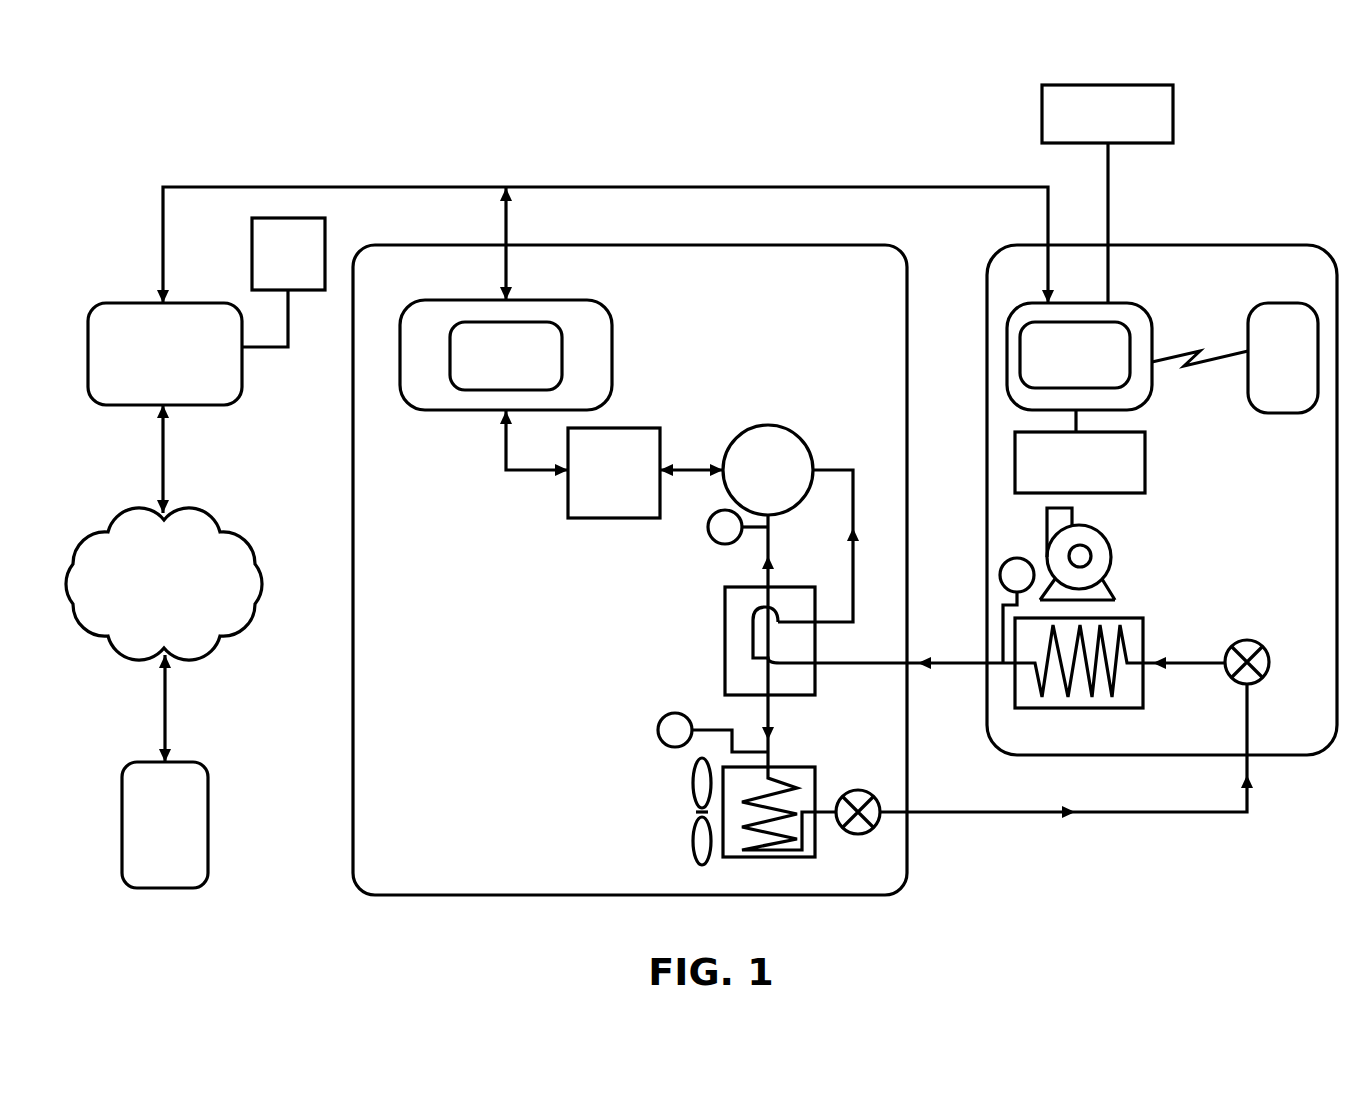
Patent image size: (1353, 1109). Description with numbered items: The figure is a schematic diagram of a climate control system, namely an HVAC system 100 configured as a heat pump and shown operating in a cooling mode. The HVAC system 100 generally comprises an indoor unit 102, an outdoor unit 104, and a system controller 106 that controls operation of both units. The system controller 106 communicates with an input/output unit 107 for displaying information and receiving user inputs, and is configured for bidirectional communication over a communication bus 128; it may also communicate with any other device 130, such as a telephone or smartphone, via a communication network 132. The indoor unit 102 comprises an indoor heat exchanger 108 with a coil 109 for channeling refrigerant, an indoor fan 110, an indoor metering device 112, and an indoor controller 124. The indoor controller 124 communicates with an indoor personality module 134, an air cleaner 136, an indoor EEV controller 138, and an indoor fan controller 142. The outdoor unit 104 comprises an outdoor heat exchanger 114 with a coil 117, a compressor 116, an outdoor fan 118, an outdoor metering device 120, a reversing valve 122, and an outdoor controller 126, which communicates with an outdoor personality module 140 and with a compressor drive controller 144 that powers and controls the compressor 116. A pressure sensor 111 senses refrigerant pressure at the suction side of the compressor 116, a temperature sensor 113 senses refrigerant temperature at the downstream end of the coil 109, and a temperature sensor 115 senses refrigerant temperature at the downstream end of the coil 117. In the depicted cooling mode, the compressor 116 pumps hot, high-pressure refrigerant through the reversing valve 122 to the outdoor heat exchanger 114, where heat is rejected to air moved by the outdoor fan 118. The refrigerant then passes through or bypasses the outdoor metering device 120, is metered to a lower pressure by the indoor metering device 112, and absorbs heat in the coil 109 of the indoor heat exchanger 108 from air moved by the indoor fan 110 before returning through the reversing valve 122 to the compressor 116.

The HVAC system 100 is at (165, 77).
The indoor unit 102 is at (1258, 245).
The outdoor unit 104 is at (765, 245).
The system controller 106 is at (143, 367).
The input/output unit 107 is at (268, 273).
The indoor heat exchanger 108 is at (1076, 710).
The coil 109 is at (1112, 683).
The indoor fan 110 is at (1112, 540).
The pressure sensor 111 is at (713, 540).
The indoor metering device 112 is at (1247, 640).
The temperature sensor 113 is at (1000, 560).
The outdoor heat exchanger 114 is at (775, 766).
The temperature sensor 115 is at (661, 744).
The compressor 116 is at (748, 482).
The coil 117 is at (775, 858).
The outdoor fan 118 is at (693, 808).
The outdoor metering device 120 is at (858, 790).
The reversing valve 122 is at (725, 640).
The indoor controller 124 is at (1158, 312).
The outdoor controller 126 is at (612, 336).
The communication bus 128 is at (652, 187).
The other device 130 is at (145, 840).
The communication network 132 is at (144, 597).
The indoor personality module 134 is at (1055, 369).
The air cleaner 136 is at (1087, 126).
The indoor EEV controller 138 is at (1263, 370).
The outdoor personality module 140 is at (486, 368).
The indoor fan controller 142 is at (1060, 474).
The compressor drive controller 144 is at (594, 485).